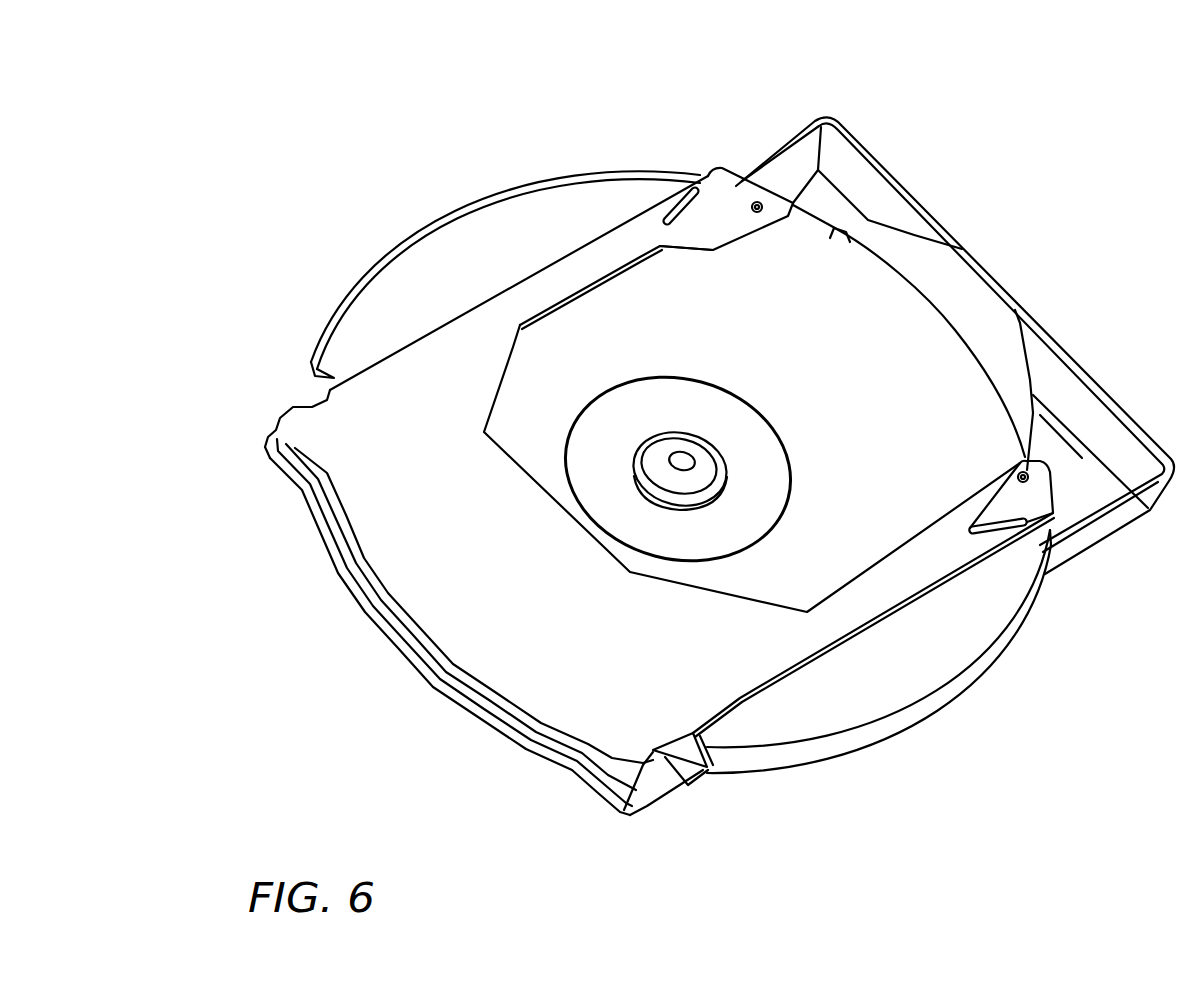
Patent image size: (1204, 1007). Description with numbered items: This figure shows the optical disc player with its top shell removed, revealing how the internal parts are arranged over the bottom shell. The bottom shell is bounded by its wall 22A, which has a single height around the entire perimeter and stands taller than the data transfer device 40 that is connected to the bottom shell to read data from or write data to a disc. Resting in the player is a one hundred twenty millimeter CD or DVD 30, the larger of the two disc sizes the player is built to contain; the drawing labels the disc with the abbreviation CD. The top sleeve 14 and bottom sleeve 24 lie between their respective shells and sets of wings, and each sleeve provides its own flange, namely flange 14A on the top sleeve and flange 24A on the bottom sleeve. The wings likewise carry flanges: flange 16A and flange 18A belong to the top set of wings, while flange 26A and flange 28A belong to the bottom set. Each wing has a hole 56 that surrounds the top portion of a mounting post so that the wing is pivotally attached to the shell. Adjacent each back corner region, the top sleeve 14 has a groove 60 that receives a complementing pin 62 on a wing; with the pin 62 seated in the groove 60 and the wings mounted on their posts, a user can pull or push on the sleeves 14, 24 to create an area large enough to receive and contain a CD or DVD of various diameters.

The top sleeve 14 is at (420, 593).
The flange 14A is at (520, 707).
The flange 16A is at (361, 290).
The flange 18A is at (890, 730).
The wall 22A is at (1120, 522).
The bottom sleeve 24 is at (430, 680).
The flange 24A is at (453, 683).
The flange 26A is at (317, 385).
The flange 28A is at (800, 770).
The 120 mm CD or DVD 30 is at (953, 357).
The data transfer device 40 is at (943, 277).
The hole 56 is at (760, 204).
The groove 60 is at (678, 208).
The pin 62 is at (688, 190).
The compact disc CD is at (318, 395).